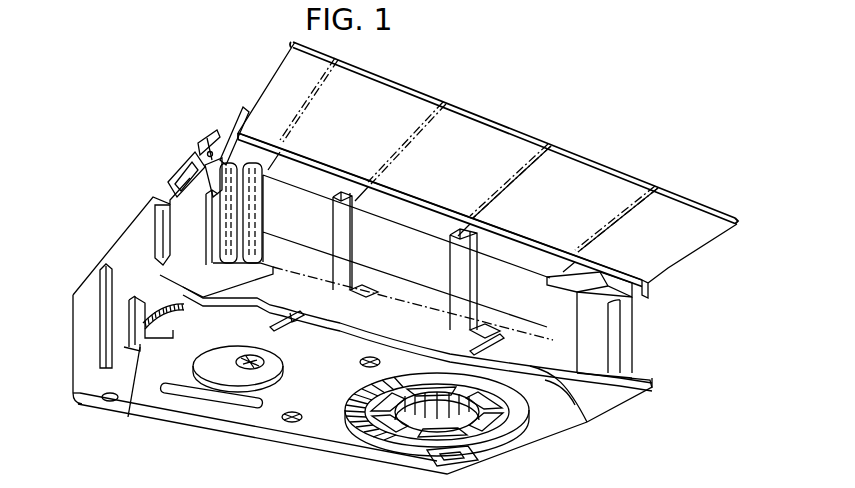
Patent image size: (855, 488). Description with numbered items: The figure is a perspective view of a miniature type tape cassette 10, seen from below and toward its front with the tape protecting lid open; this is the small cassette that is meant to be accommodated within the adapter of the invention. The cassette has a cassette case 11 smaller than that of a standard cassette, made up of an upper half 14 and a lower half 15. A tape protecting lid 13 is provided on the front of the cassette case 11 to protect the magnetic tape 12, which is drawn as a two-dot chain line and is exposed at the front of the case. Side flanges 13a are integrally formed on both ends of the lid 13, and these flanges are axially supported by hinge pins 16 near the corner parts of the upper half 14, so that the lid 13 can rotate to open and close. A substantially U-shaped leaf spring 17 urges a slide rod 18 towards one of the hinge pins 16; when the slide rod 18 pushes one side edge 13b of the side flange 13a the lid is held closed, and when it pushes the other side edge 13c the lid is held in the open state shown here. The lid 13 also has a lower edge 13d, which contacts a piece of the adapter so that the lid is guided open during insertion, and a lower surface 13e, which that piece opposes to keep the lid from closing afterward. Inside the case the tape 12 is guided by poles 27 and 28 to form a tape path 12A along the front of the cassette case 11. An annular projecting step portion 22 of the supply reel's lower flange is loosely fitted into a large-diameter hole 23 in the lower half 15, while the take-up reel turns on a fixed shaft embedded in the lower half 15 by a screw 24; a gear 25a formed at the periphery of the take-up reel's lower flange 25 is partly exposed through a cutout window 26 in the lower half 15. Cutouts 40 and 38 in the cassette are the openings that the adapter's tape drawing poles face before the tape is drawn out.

The miniature type tape cassette 10 is at (444, 79).
The cassette case 11 is at (107, 232).
The magnetic tape 12 is at (441, 220).
The tape path 12A is at (544, 246).
The tape protecting lid 13 is at (542, 128).
The side flange 13a is at (223, 127).
The side edge 13b is at (268, 128).
The side edge 13c is at (202, 147).
The lower edge 13d is at (598, 163).
The lower surface 13e is at (665, 206).
The upper half 14 is at (76, 292).
The lower half 15 is at (70, 365).
The hinge pin 16 is at (210, 150).
The leaf spring 17 is at (155, 225).
The slide rod 18 is at (192, 166).
The annular projecting step portion 22 is at (363, 423).
The hole 23 is at (350, 398).
The screw 24 is at (256, 373).
The lower flange 25 is at (180, 323).
The gear 25a is at (151, 332).
The cutout window 26 is at (140, 348).
The pole 27 is at (633, 333).
The pole 28 is at (265, 218).
The cutout 38 is at (596, 406).
The cutout 40 is at (307, 297).